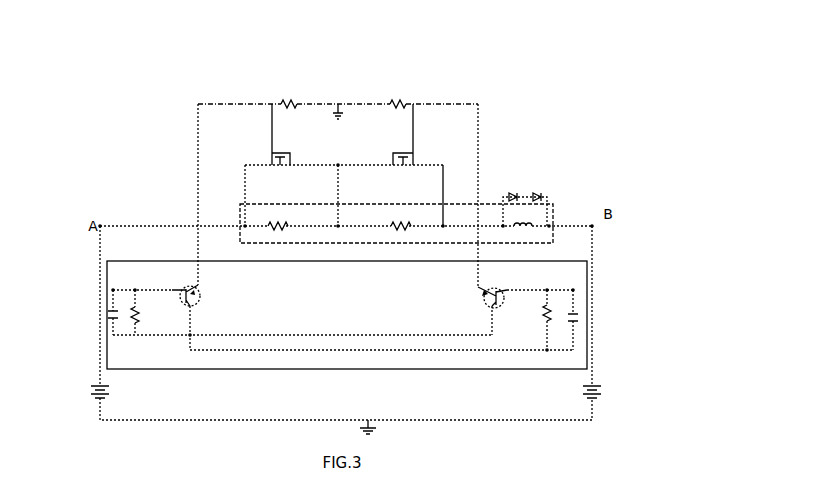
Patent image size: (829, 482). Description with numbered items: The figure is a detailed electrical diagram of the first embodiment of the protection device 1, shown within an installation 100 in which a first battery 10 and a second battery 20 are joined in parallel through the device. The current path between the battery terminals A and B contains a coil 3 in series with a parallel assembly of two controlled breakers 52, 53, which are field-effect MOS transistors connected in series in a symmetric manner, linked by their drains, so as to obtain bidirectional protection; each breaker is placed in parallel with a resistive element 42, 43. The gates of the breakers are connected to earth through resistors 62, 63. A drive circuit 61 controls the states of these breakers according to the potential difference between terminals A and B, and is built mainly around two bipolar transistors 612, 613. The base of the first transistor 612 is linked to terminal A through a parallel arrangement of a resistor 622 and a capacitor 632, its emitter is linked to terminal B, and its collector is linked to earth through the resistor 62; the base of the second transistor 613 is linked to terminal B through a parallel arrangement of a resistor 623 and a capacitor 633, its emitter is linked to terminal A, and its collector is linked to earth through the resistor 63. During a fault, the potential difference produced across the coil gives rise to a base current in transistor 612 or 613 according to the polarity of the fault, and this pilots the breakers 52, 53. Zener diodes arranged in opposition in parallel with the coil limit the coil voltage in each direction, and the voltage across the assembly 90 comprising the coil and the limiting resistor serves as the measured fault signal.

The installation 100 is at (588, 146).
The protection device 1 is at (531, 146).
The coil 3 is at (537, 222).
The first battery 10 is at (91, 392).
The second battery 20 is at (604, 395).
The resistive element 42 is at (400, 233).
The resistive element 43 is at (272, 233).
The controlled breaker 52 is at (407, 152).
The controlled breaker 53 is at (279, 152).
The drive circuit 61 is at (568, 258).
The resistor 62 is at (403, 102).
The resistor 63 is at (292, 102).
The assembly 90 is at (240, 212).
The first transistor 612 is at (483, 302).
The second transistor 613 is at (200, 303).
The resistor 622 is at (140, 320).
The resistor 623 is at (548, 318).
The capacitor 632 is at (113, 308).
The capacitor 633 is at (572, 312).